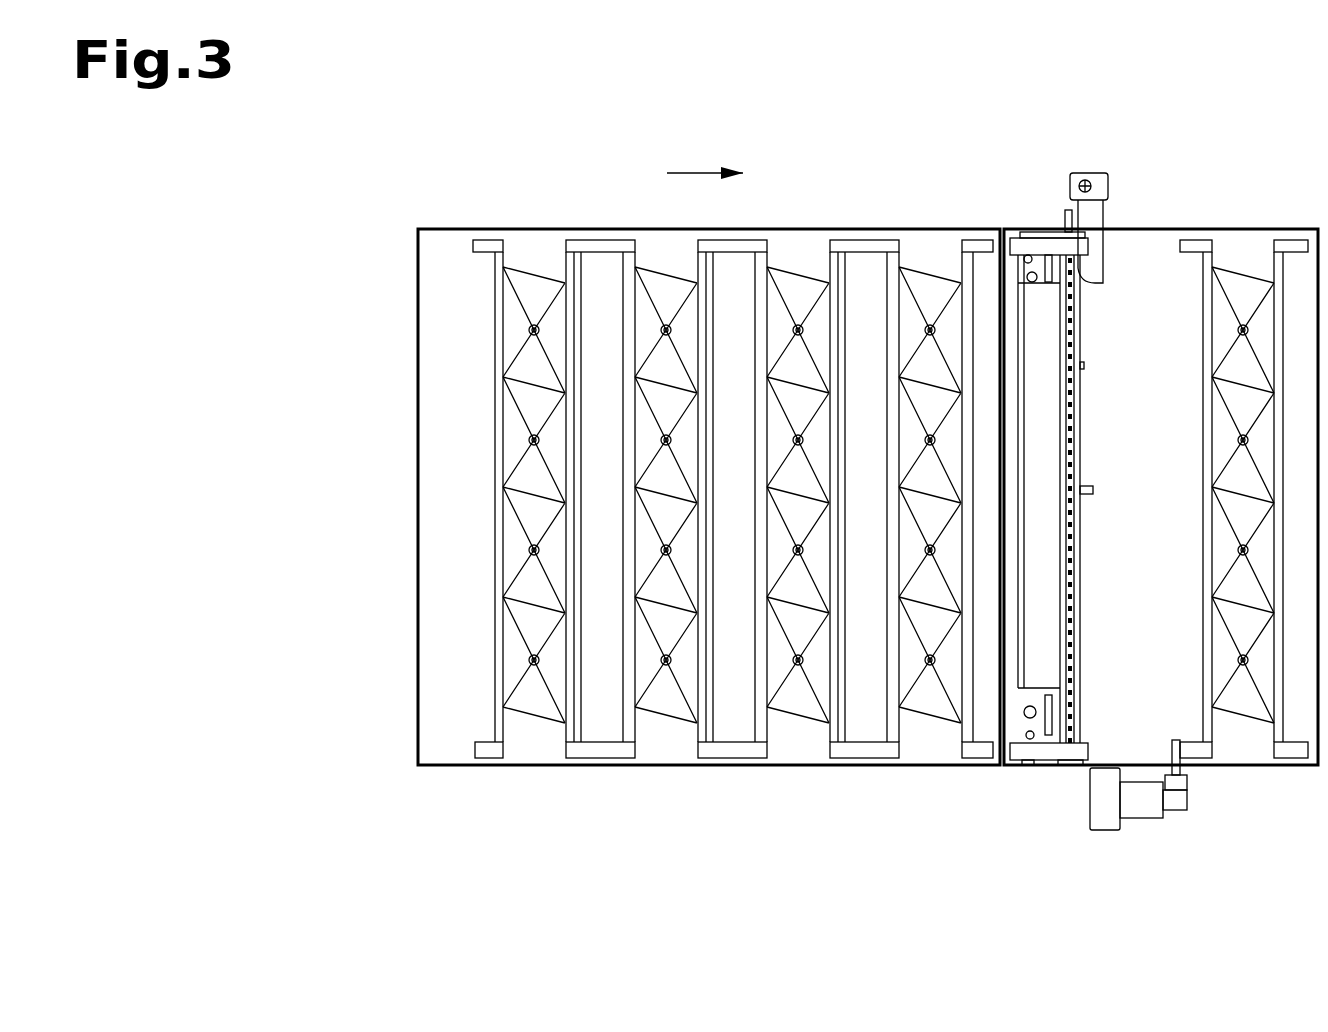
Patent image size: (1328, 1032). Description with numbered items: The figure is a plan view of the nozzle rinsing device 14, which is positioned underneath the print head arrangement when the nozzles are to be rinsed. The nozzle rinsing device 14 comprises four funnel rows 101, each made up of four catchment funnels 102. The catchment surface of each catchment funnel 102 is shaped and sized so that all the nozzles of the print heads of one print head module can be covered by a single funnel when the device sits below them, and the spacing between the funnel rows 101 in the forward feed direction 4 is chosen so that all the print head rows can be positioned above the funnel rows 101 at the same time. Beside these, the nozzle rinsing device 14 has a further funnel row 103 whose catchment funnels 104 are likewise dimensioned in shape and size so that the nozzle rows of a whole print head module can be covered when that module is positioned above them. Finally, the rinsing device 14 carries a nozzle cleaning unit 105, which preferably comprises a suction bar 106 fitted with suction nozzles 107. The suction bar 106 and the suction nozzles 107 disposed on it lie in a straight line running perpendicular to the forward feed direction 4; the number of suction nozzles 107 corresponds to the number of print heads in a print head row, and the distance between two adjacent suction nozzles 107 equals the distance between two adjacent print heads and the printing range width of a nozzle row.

The forward feed direction 4 is at (690, 172).
The nozzle rinsing device 14 is at (474, 818).
The funnel rows 101 is at (527, 740).
The catchment funnels 102 is at (523, 328).
The funnel row 103 is at (1237, 740).
The catchment funnels 104 is at (1200, 325).
The nozzle cleaning unit 105 is at (1025, 215).
The suction bar 106 is at (1076, 740).
The suction nozzles 107 is at (1083, 579).